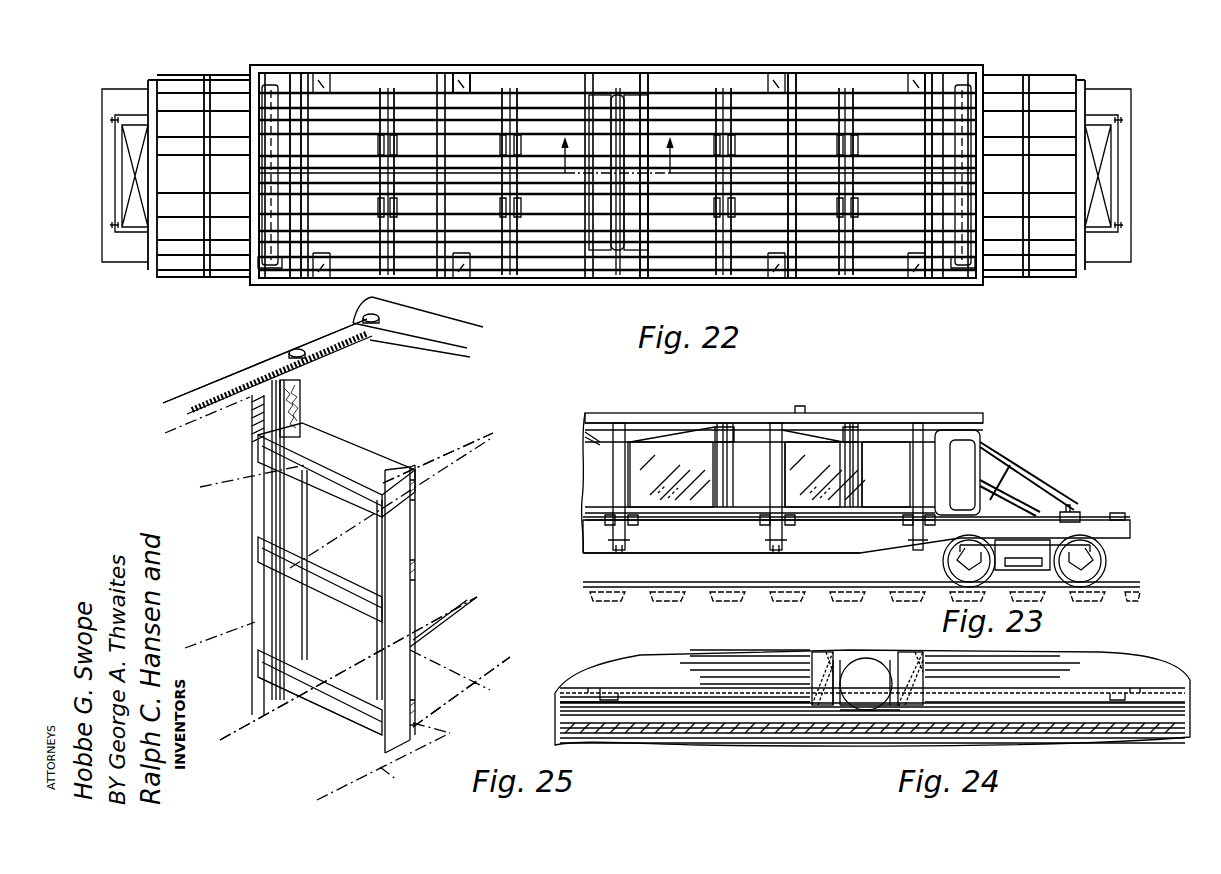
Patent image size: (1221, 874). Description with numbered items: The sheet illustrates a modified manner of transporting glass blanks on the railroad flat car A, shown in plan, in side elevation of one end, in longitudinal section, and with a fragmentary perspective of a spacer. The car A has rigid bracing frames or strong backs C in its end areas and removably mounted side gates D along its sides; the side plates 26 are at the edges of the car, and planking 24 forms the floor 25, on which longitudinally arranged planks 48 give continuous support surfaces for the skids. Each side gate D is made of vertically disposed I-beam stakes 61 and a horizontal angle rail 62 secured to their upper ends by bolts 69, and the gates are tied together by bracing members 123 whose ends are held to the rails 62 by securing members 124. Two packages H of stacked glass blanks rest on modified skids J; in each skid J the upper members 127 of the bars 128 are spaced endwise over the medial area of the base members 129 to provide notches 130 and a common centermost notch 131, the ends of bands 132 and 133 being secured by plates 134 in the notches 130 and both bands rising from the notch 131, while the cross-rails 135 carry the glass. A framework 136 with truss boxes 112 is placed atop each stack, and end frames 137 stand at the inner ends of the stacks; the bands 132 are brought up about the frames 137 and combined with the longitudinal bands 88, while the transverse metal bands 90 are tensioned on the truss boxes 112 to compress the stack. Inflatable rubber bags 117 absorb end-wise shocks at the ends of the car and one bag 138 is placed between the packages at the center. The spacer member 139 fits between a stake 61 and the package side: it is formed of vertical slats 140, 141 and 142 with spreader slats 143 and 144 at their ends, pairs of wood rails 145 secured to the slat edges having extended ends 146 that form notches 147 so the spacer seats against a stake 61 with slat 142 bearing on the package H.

In FIG. 22, the railroad flat car A is at (123, 105).
In FIG. 23, the railroad flat car A is at (595, 540).
In FIG. 22, the bracing frame (strong back) C is at (186, 93).
In FIG. 23, the bracing frame (strong back) C is at (1021, 470).
In FIG. 22, the side gate D is at (657, 72).
In FIG. 23, the side gate D is at (696, 417).
In FIG. 25, the side gate D is at (192, 400).
In FIG. 22, the package H is at (470, 115).
In FIG. 23, the package H is at (598, 462).
In FIG. 24, the package H is at (720, 668).
In FIG. 25, the package H is at (464, 450).
In FIG. 23, the skid J is at (582, 517).
In FIG. 24, the skid J is at (700, 705).
In FIG. 22, the planking 24 is at (616, 156).
In FIG. 24, the floor 25 is at (795, 735).
In FIG. 25, the floor 25 is at (447, 643).
In FIG. 23, the side plate 26 is at (650, 535).
In FIG. 24, the plank 48 is at (773, 720).
In FIG. 25, the plank 48 is at (255, 722).
In FIG. 23, the stake 61 is at (610, 472).
In FIG. 25, the stake 61 is at (255, 475).
In FIG. 23, the rail 62 is at (950, 415).
In FIG. 25, the rail 62 is at (222, 378).
In FIG. 25, the bolt 69 is at (290, 352).
In FIG. 22, the band 88 is at (312, 265).
In FIG. 23, the band 88 is at (895, 432).
In FIG. 22, the band 90 is at (730, 240).
In FIG. 23, the band 90 is at (728, 493).
In FIG. 22, the truss box 112 is at (378, 210).
In FIG. 23, the truss box 112 is at (728, 432).
In FIG. 22, the inflatable rubber bag 117 is at (272, 88).
In FIG. 22, the bracing member 123 is at (797, 240).
In FIG. 23, the bracing member 123 is at (806, 408).
In FIG. 25, the bracing member 123 is at (420, 338).
In FIG. 25, the securing member 124 is at (371, 326).
In FIG. 24, the upper member 127 is at (670, 703).
In FIG. 24, the bar 128 is at (633, 702).
In FIG. 24, the base member 129 is at (738, 708).
In FIG. 24, the notch 130 is at (597, 690).
In FIG. 24, the notch 131 is at (848, 708).
In FIG. 22, the band 132 is at (560, 237).
In FIG. 23, the band 132 is at (585, 433).
In FIG. 24, the band 132 is at (848, 668).
In FIG. 22, the band 133 is at (690, 240).
In FIG. 23, the band 133 is at (660, 440).
In FIG. 24, the band 133 is at (880, 662).
In FIG. 24, the plate 134 is at (610, 695).
In FIG. 24, the cross-rail 135 is at (753, 702).
In FIG. 22, the framework 136 is at (403, 115).
In FIG. 22, the end frame (bulkhead) 137 is at (612, 240).
In FIG. 24, the end frame (bulkhead) 137 is at (822, 660).
In FIG. 22, the bag 138 is at (617, 110).
In FIG. 24, the bag 138 is at (873, 692).
In FIG. 22, the spacer member 139 is at (790, 75).
In FIG. 23, the spacer member 139 is at (768, 487).
In FIG. 25, the spacer member 139 is at (375, 443).
In FIG. 25, the slat 140 is at (308, 517).
In FIG. 25, the slat 141 is at (377, 535).
In FIG. 25, the slat 142 is at (398, 527).
In FIG. 25, the spreader slat 143 is at (323, 448).
In FIG. 25, the spreader slat 144 is at (343, 715).
In FIG. 25, the wood rail 145 is at (300, 468).
In FIG. 25, the extended end 146 is at (275, 452).
In FIG. 25, the notch 147 is at (254, 428).